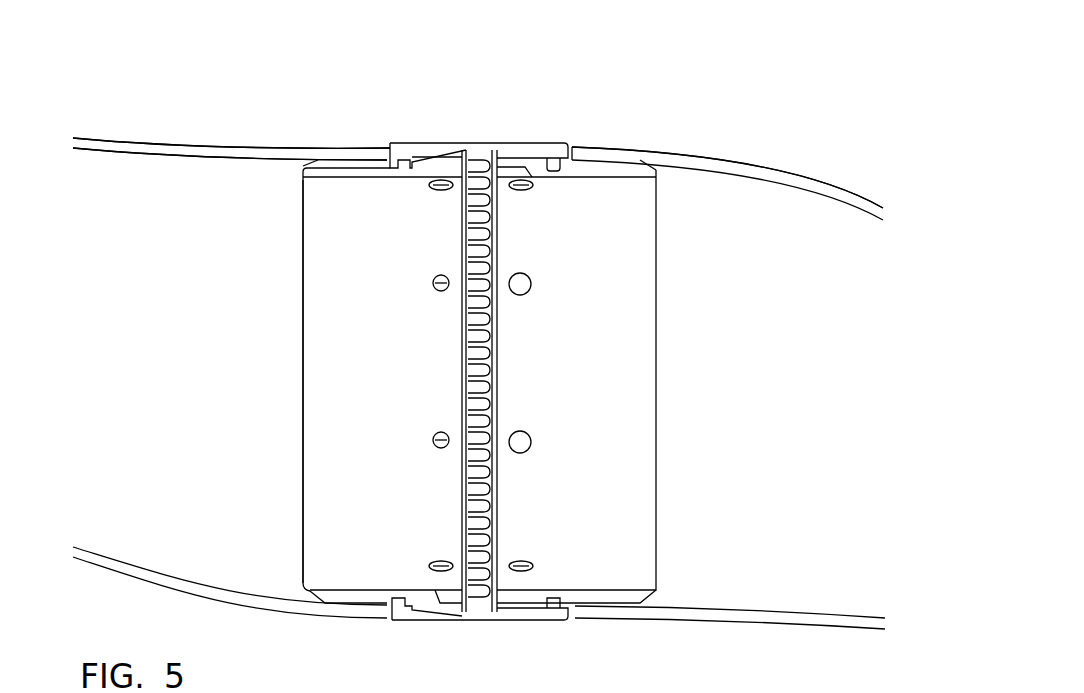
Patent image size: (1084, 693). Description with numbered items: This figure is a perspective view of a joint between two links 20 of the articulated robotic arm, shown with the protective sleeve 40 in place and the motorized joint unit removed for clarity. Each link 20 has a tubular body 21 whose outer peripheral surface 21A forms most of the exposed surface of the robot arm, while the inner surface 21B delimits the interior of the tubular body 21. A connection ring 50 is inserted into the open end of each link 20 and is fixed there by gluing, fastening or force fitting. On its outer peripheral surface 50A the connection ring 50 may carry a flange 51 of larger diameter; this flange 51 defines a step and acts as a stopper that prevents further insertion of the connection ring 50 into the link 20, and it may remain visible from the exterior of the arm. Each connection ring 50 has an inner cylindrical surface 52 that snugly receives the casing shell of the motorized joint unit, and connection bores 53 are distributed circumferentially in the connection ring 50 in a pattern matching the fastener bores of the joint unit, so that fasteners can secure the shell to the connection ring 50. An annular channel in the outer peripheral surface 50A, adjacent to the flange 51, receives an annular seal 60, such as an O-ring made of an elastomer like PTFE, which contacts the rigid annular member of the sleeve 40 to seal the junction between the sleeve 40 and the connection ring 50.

The link 20 is at (213, 150).
The tubular body 21 is at (110, 553).
The outer peripheral surface 21A is at (140, 142).
The inner surface 21B is at (118, 160).
The protective sleeve 40 is at (501, 126).
The connection ring 50 is at (270, 366).
The outer peripheral surface 50A is at (350, 604).
The flange 51 is at (388, 142).
The inner cylindrical surface 52 is at (382, 269).
The connection bores 53 is at (424, 430).
The annular seal 60 is at (553, 170).